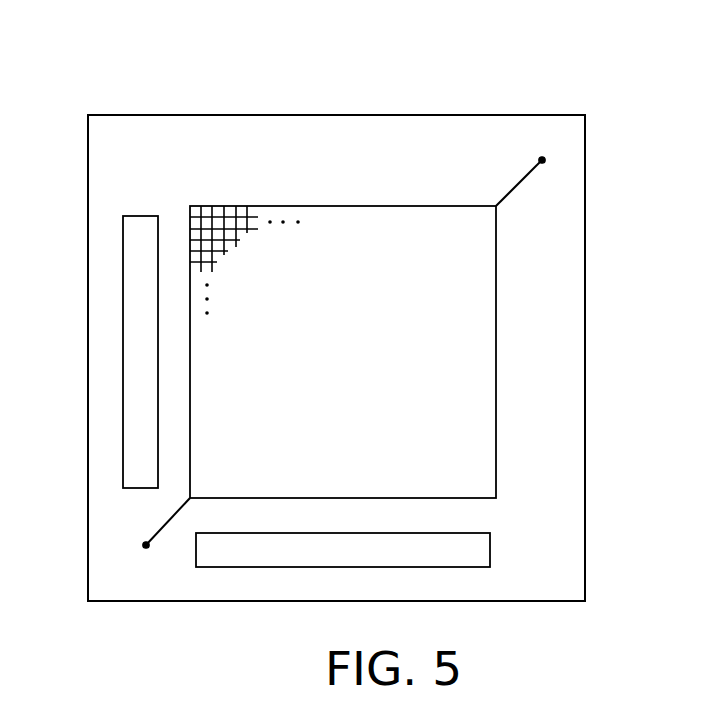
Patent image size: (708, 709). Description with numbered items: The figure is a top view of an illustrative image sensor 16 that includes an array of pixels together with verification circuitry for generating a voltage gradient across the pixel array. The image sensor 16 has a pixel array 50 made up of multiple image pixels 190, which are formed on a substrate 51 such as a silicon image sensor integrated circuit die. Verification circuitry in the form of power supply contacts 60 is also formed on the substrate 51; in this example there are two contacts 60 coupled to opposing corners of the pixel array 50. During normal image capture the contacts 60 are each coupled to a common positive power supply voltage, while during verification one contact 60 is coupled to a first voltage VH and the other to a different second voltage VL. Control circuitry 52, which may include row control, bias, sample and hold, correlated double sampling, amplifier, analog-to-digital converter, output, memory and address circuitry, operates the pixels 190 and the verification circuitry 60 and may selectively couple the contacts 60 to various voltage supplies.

The image sensor 16 is at (100, 53).
The substrate 51 is at (180, 122).
The pixel array 50 is at (422, 212).
The control circuitry 52 is at (134, 335).
The power supply contacts 60 is at (545, 163).
The image pixels 190 is at (230, 245).